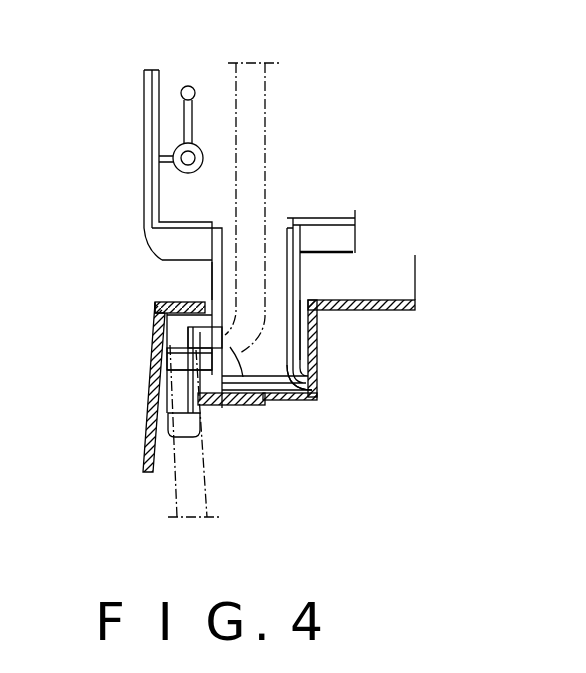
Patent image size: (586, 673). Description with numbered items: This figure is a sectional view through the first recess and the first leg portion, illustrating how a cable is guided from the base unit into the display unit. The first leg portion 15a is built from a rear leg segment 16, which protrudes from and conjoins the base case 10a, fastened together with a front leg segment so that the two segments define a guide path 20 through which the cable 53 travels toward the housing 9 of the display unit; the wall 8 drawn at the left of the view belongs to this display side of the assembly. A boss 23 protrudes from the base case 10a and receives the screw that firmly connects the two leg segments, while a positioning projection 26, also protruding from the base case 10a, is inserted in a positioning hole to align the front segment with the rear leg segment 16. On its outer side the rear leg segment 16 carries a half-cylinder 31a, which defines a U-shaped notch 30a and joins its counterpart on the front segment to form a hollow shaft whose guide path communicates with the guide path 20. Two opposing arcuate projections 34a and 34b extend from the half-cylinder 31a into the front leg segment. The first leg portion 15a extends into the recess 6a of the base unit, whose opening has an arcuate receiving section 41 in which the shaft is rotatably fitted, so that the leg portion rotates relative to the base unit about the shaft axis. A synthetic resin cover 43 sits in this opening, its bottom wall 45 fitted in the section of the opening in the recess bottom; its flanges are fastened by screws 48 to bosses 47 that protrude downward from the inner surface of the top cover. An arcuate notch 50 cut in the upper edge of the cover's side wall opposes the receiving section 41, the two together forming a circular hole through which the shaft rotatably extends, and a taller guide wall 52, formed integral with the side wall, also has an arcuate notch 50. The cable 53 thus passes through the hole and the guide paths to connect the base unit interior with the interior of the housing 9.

The side wall 8 is at (140, 91).
The housing 9 is at (143, 213).
The rear leg segment 16 is at (212, 270).
The positioning projection 26 is at (191, 87).
The boss 23 is at (203, 157).
The cable 53 is at (262, 113).
The first leg portion 15a is at (300, 277).
The base case 10a is at (415, 277).
The guide path 20 is at (278, 321).
The recess 6a is at (295, 368).
The bottom wall 45 is at (250, 405).
The U-shaped notch 30a is at (245, 405).
The arcuate projection 34a is at (197, 300).
The receiving section 41 is at (153, 307).
The cover 43 is at (160, 432).
The boss 47 is at (190, 326).
The half-cylinder 31a is at (195, 345).
The guide wall 52 is at (193, 375).
The arcuate notch 50 is at (190, 398).
The arcuate projection 34b is at (221, 408).
The screw 48 is at (182, 470).